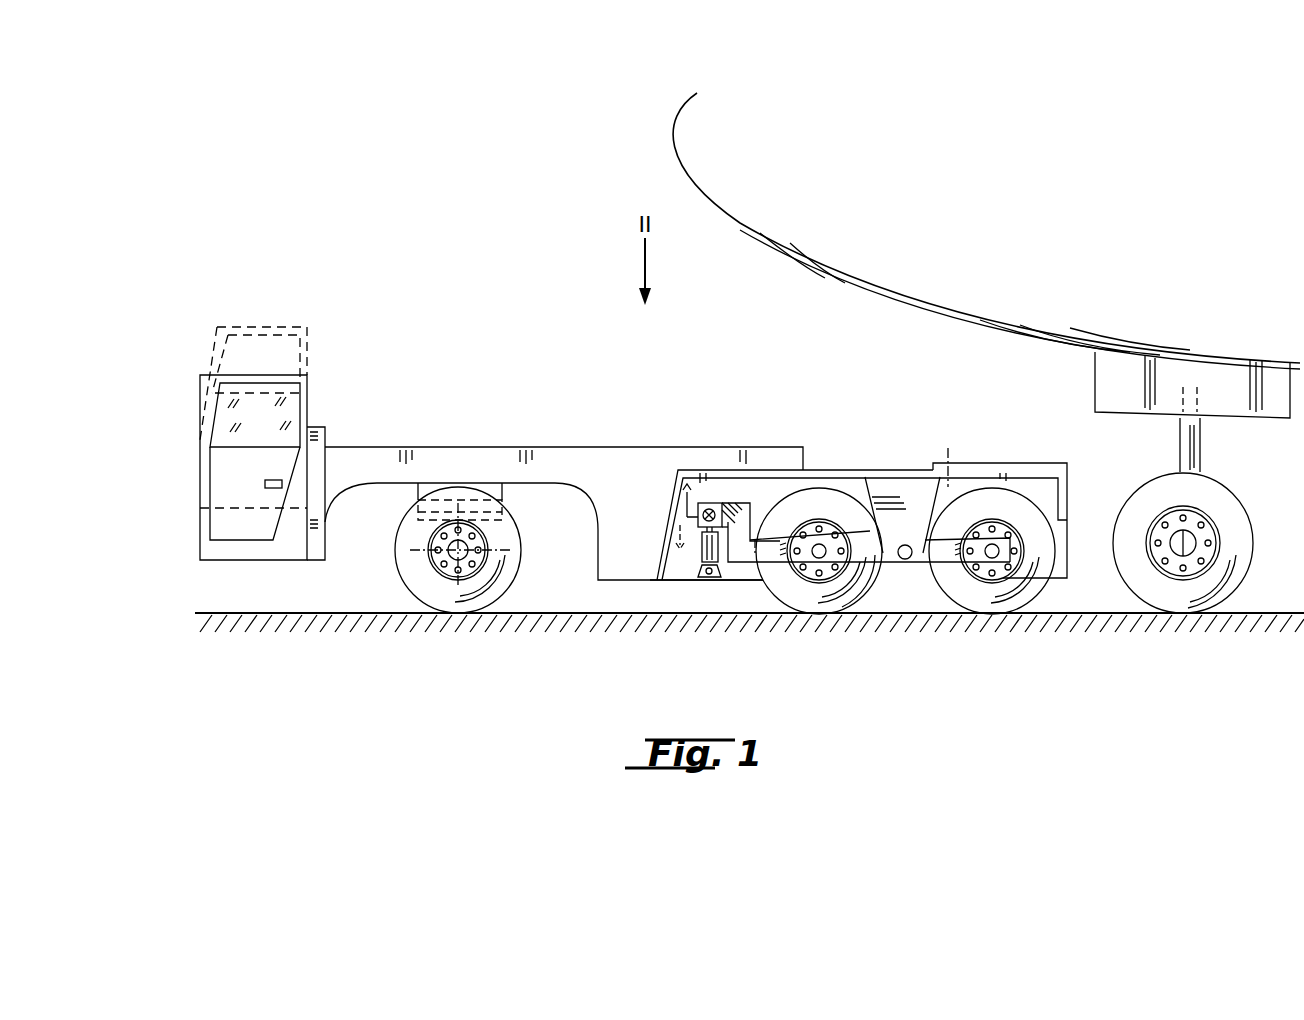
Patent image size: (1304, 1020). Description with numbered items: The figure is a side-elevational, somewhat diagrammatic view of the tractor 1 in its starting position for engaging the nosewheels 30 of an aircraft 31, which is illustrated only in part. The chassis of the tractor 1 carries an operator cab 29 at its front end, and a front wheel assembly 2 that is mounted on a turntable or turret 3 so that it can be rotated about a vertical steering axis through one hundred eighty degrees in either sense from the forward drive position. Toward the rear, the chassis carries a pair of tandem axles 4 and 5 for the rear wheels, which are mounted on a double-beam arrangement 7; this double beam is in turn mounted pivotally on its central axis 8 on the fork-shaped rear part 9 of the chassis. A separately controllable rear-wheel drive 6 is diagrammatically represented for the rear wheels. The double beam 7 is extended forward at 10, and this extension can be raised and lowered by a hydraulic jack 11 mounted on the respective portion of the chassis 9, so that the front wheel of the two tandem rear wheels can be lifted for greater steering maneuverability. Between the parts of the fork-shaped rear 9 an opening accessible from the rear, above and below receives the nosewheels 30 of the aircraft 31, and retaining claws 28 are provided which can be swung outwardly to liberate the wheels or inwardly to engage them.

The tractor 1 is at (465, 436).
The front wheel assembly 2 is at (450, 552).
The turntable or turret 3 is at (490, 520).
The tandem axle 4 is at (817, 560).
The tandem axle 5 is at (994, 560).
The rear-wheel drive 6 is at (882, 595).
The double-beam arrangement 7 is at (858, 555).
The central axis 8 is at (906, 560).
The fork-shaped rear part of the chassis 9 is at (880, 460).
The forward extension of the double beam 10 is at (730, 502).
The hydraulic jack 11 is at (702, 548).
The retaining claw 28 is at (983, 465).
The operator cab 29 is at (290, 410).
The nosewheels 30 is at (1243, 524).
The aircraft 31 is at (960, 257).